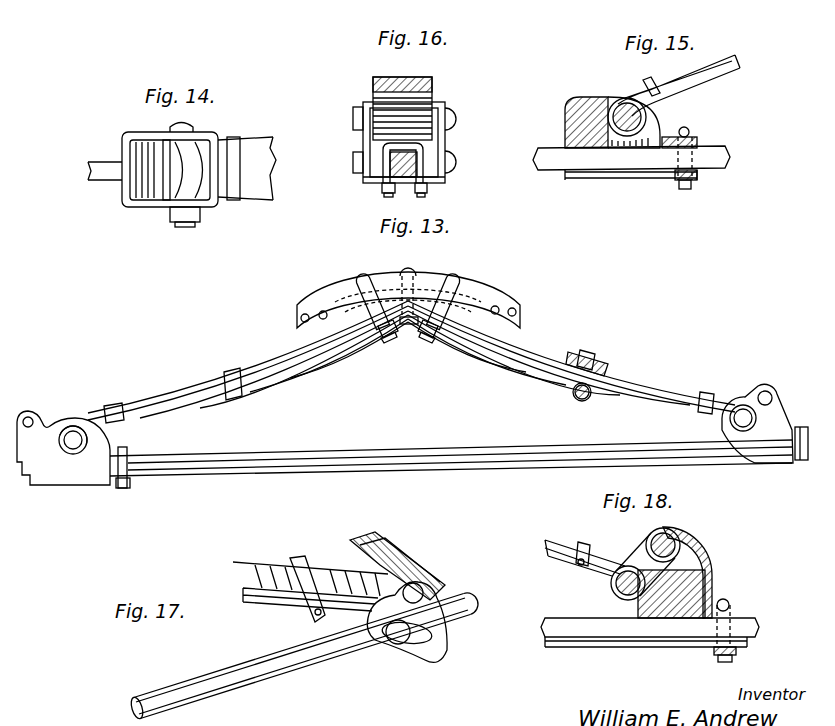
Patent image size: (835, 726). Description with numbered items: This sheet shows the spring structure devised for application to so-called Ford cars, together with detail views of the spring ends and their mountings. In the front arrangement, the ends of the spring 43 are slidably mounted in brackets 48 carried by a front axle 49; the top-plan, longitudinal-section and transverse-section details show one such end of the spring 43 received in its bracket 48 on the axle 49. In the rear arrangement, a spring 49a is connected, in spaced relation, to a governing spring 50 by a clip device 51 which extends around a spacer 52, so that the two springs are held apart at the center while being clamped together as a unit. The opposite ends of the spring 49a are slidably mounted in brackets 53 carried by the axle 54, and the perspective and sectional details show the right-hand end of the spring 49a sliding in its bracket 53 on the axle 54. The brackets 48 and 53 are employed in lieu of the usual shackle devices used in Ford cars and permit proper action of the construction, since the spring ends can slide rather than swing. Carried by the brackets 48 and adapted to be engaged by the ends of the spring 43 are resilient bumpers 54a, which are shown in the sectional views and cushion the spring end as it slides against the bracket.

In FIG. 14, the spring 43 is at (255, 158).
In FIG. 16, the spring 43 is at (430, 90).
In FIG. 15, the spring 43 is at (717, 70).
In FIG. 13, the spring 43 is at (667, 392).
In FIG. 17, the spring 43 is at (313, 565).
In FIG. 18, the spring 43 is at (562, 545).
In FIG. 14, the bracket 48 is at (165, 210).
In FIG. 16, the bracket 48 is at (419, 149).
In FIG. 15, the bracket 48 is at (657, 120).
In FIG. 16, the front axle 49 is at (380, 185).
In FIG. 15, the front axle 49 is at (632, 165).
In FIG. 13, the spring 49a is at (330, 372).
In FIG. 13, the governing spring 50 is at (528, 347).
In FIG. 13, the clip device 51 is at (425, 292).
In FIG. 13, the spacer 52 is at (480, 340).
In FIG. 13, the bracket 53 is at (105, 443).
In FIG. 17, the bracket 53 is at (442, 637).
In FIG. 18, the bracket 53 is at (710, 578).
In FIG. 13, the axle 54 is at (405, 478).
In FIG. 17, the axle 54 is at (253, 663).
In FIG. 18, the axle 54 is at (572, 645).
In FIG. 15, the resilient bumper 54a is at (572, 103).
In FIG. 17, the resilient bumper 54a is at (430, 590).
In FIG. 18, the resilient bumper 54a is at (668, 618).